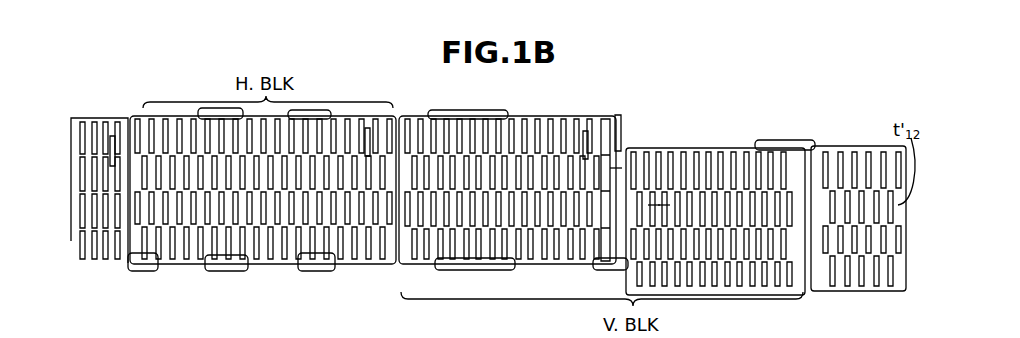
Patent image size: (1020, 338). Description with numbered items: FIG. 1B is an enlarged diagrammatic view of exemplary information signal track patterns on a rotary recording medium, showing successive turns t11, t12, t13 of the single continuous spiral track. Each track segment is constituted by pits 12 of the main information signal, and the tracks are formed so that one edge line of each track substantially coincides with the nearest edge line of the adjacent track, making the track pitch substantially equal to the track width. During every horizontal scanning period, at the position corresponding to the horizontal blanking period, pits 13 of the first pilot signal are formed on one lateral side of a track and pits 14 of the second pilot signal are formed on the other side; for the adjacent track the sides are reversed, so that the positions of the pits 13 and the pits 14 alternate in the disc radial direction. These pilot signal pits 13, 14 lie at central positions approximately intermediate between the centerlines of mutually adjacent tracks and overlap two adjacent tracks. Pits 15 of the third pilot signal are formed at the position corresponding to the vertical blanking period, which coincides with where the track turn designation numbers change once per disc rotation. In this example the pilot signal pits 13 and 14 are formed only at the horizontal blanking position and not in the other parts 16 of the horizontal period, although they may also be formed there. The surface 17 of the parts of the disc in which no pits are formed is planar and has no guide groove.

The pits of the main information signal 12 is at (70, 117).
The pits of the first pilot signal 13 is at (168, 125).
The pits of the second pilot signal 14 is at (203, 103).
The pits of the third pilot signal 15 is at (457, 103).
The other parts 16 is at (113, 262).
The surface 17 is at (102, 127).
The track turn t11 is at (608, 160).
The track turn t12 is at (647, 197).
The track turn t13 is at (657, 197).